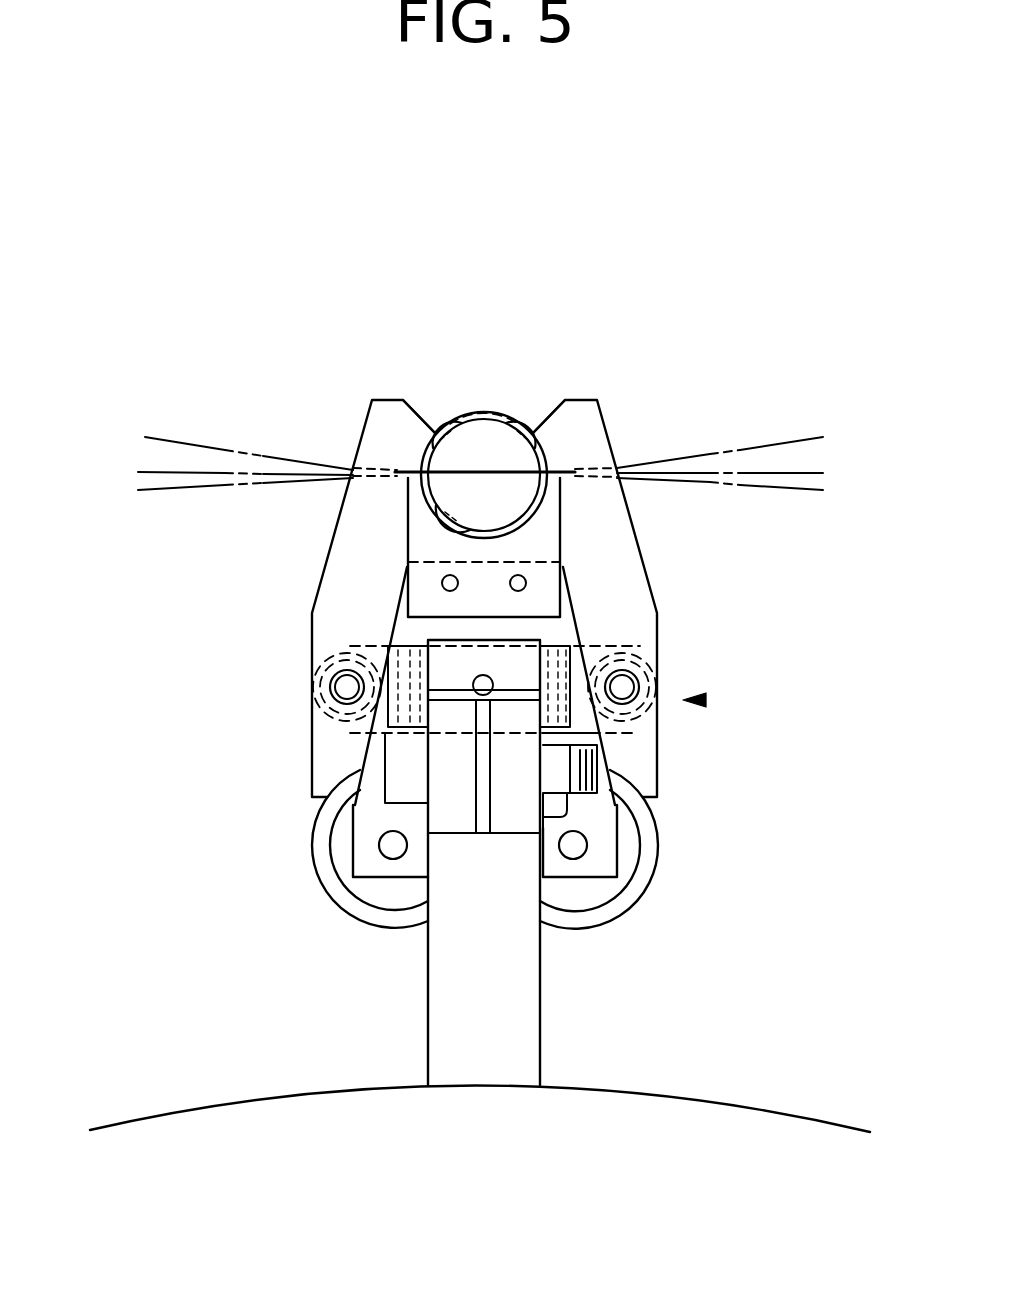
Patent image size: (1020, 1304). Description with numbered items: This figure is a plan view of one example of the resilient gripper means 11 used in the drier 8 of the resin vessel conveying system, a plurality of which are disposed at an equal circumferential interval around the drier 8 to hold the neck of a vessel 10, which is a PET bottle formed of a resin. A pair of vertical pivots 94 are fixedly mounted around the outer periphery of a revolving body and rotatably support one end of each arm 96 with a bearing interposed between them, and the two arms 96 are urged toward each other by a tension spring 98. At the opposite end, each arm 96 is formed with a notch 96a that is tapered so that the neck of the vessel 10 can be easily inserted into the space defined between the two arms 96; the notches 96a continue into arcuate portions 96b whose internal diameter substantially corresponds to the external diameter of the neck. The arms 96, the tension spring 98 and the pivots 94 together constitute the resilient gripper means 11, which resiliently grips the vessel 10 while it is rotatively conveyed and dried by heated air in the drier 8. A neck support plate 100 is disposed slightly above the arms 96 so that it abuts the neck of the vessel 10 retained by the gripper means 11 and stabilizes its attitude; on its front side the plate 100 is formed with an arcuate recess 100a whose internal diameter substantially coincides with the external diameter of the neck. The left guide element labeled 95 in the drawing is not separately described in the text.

The drier 8 is at (135, 555).
The vessel 10 is at (527, 492).
The resilient gripper means 11 is at (705, 700).
The vertical pivots 94 is at (393, 845).
The left guide member 95 is at (337, 583).
The arm 96 is at (622, 587).
The notch 96a is at (421, 413).
The arcuate portions 96b is at (447, 437).
The tension spring 98 is at (610, 637).
The neck support plate 100 is at (547, 543).
The arcuate recess 100a is at (430, 505).